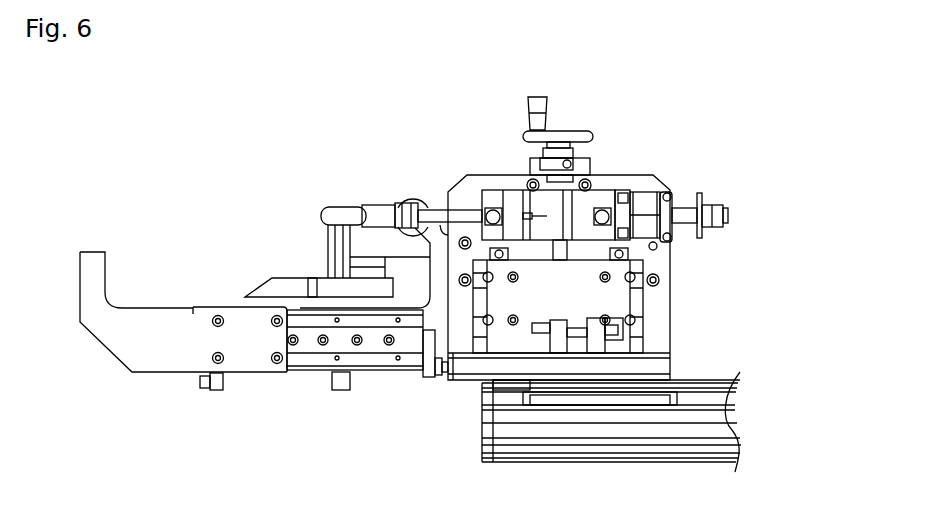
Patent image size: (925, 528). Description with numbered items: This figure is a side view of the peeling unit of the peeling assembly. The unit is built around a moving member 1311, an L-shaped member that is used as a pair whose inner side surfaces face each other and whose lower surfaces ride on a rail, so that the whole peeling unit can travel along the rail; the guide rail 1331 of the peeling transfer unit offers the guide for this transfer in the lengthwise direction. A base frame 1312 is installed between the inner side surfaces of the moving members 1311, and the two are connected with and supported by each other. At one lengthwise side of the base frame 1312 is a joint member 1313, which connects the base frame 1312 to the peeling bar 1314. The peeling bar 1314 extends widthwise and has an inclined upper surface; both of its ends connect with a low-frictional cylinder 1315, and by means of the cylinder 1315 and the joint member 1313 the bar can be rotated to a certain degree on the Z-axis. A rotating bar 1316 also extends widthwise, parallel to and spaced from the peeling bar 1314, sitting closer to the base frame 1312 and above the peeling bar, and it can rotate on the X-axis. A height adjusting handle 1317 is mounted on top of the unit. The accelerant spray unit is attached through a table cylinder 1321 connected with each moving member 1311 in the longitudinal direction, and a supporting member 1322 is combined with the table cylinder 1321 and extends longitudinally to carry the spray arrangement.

The moving member 1311 is at (607, 302).
The base frame 1312 is at (627, 175).
The joint member 1313 is at (380, 288).
The peeling bar 1314 is at (288, 285).
The low-frictional cylinder 1315 is at (548, 207).
The rotating bar 1316 is at (413, 200).
The height adjusting handle 1317 is at (547, 105).
The table cylinder 1321 is at (312, 357).
The supporting member 1322 is at (122, 335).
The guide rail 1331 is at (507, 432).